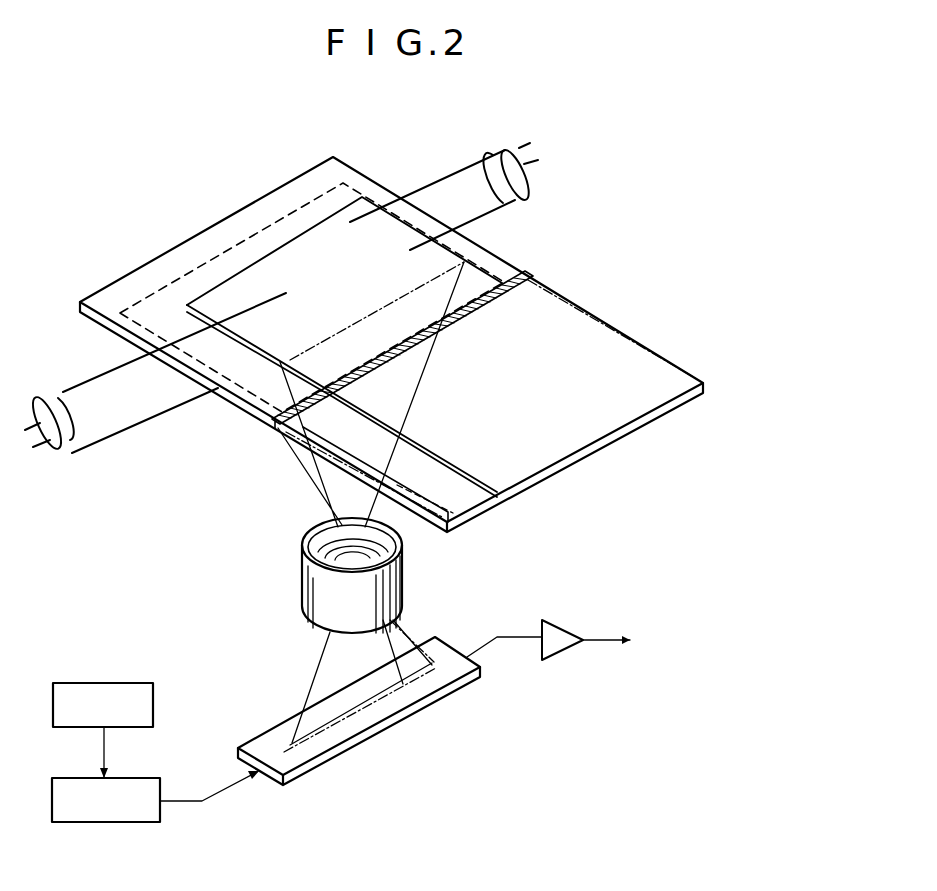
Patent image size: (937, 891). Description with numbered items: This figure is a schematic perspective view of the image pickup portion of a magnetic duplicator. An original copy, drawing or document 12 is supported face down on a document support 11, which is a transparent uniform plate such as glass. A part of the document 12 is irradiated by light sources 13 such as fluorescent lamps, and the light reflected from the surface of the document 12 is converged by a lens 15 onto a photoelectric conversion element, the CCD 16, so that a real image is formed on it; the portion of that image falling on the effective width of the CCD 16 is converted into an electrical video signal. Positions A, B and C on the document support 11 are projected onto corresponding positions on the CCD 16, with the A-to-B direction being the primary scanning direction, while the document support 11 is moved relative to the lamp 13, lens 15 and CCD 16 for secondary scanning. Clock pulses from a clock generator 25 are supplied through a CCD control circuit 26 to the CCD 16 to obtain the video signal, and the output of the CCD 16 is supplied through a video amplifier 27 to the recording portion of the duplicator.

The document support 11 is at (123, 283).
The document 12 is at (228, 278).
The light sources 13 is at (436, 185).
The lens 15 is at (300, 552).
The CCD 16 is at (398, 722).
The clock generator 25 is at (123, 683).
The CCD control circuit 26 is at (133, 778).
The video amplifier 27 is at (558, 630).